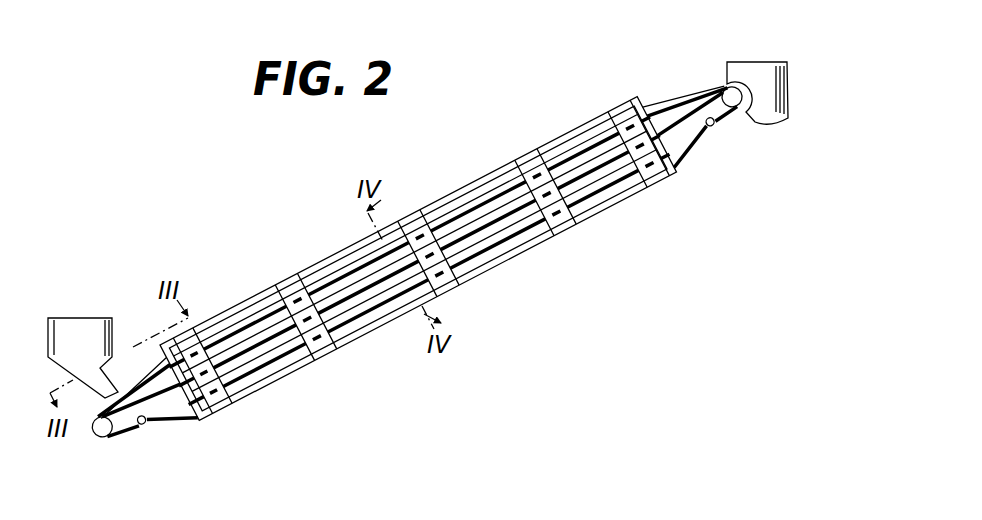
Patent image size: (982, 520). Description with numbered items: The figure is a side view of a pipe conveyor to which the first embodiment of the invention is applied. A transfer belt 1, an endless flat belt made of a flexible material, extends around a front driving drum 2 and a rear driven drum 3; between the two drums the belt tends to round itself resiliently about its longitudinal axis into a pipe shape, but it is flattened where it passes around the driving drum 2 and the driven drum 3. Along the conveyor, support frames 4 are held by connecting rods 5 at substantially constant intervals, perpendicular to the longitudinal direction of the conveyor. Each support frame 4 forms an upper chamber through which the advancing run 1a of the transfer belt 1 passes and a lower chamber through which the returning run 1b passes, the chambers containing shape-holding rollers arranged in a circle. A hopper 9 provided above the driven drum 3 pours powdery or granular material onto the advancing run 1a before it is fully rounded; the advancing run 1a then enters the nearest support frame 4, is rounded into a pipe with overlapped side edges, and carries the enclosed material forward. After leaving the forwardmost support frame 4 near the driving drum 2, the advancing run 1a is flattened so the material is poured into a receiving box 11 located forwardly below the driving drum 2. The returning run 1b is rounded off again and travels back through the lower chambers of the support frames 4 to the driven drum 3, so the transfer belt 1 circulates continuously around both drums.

The transfer belt 1 is at (337, 268).
The advancing run 1a is at (555, 165).
The returning run 1b is at (593, 193).
The driving drum 2 is at (740, 110).
The driven drum 3 is at (104, 438).
The support frame 4 is at (212, 414).
The connecting rod 5 is at (378, 328).
The hopper 9 is at (90, 318).
The receiving box 11 is at (747, 60).